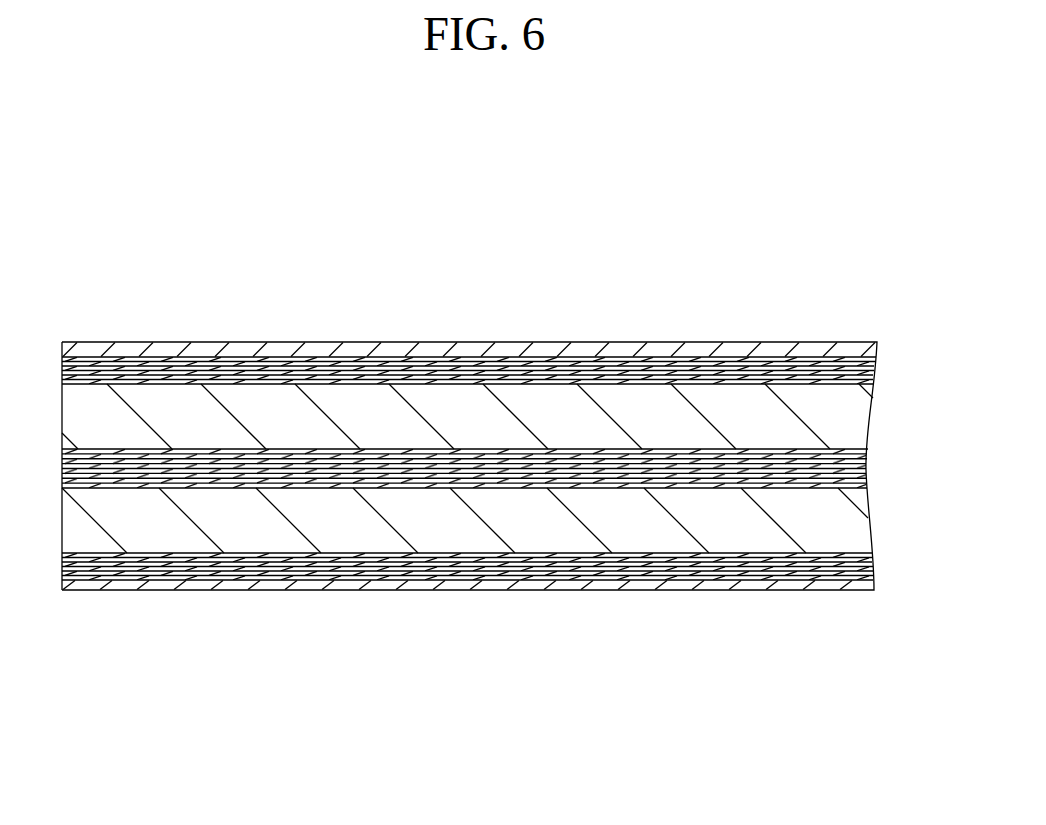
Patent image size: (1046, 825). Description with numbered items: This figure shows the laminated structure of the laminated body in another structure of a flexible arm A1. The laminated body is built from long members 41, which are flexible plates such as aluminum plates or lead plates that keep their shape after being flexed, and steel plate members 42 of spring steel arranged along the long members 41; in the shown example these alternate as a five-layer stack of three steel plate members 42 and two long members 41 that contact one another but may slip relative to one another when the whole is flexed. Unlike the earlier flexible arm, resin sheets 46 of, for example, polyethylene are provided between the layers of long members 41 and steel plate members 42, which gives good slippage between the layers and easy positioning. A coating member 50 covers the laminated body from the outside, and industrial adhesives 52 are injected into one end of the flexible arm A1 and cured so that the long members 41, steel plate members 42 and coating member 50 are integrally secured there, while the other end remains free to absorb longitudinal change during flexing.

The flexible arm A1 is at (174, 292).
The long member 41 is at (575, 420).
The steel plate member 42 is at (785, 352).
The resin sheet 46 is at (748, 453).
The coating member 50 is at (463, 340).
The industrial adhesive 52 is at (130, 383).